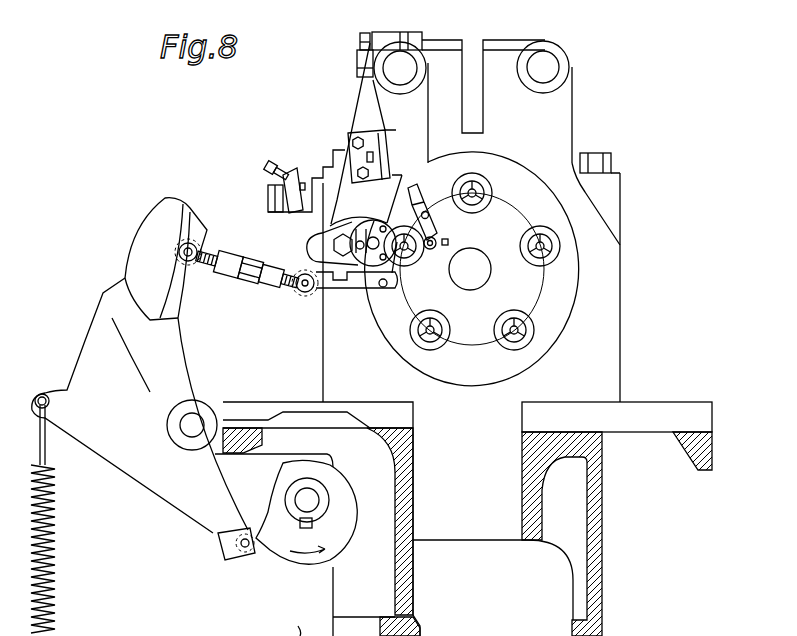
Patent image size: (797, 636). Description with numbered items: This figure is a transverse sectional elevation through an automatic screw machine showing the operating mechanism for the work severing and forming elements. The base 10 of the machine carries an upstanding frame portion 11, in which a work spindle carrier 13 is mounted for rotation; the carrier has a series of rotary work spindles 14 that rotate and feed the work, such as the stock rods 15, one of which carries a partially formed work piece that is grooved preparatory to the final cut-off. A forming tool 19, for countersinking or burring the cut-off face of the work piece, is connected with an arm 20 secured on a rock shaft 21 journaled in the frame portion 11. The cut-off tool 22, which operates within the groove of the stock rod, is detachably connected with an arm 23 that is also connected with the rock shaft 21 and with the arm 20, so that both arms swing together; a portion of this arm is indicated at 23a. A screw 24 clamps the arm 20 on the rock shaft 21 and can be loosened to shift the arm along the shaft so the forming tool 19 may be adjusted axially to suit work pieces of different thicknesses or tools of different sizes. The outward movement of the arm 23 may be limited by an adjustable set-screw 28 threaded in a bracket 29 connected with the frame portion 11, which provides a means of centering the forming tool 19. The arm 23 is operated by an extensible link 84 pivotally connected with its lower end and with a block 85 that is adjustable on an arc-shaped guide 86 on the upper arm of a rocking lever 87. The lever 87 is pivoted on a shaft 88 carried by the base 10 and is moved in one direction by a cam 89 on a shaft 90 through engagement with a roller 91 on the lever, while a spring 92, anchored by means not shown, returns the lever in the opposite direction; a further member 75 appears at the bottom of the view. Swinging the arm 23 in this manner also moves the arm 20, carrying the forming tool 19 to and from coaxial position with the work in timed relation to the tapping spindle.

The base 10 is at (404, 513).
The frame portion 11 is at (572, 116).
The work spindle carrier 13 is at (576, 262).
The rotary work spindles 14 is at (492, 195).
The stock rods 15 is at (474, 192).
The forming tool 19 is at (437, 240).
The arm 20 is at (424, 151).
The rock shaft 21 is at (396, 70).
The cut-off tool 22 is at (402, 283).
The arm 23 is at (362, 108).
The hook 23a is at (350, 260).
The screw 24 is at (362, 40).
The adjustable set-screw 28 is at (277, 165).
The bracket 29 is at (293, 212).
The member 75 is at (263, 626).
The extensible link 84 is at (270, 282).
The block 85 is at (200, 228).
The arc-shaped guide 86 is at (180, 281).
The rocking lever 87 is at (183, 380).
The shaft 88 is at (192, 425).
The cam 89 is at (313, 473).
The shaft 90 is at (320, 494).
The roller 91 is at (258, 555).
The spring 92 is at (57, 568).